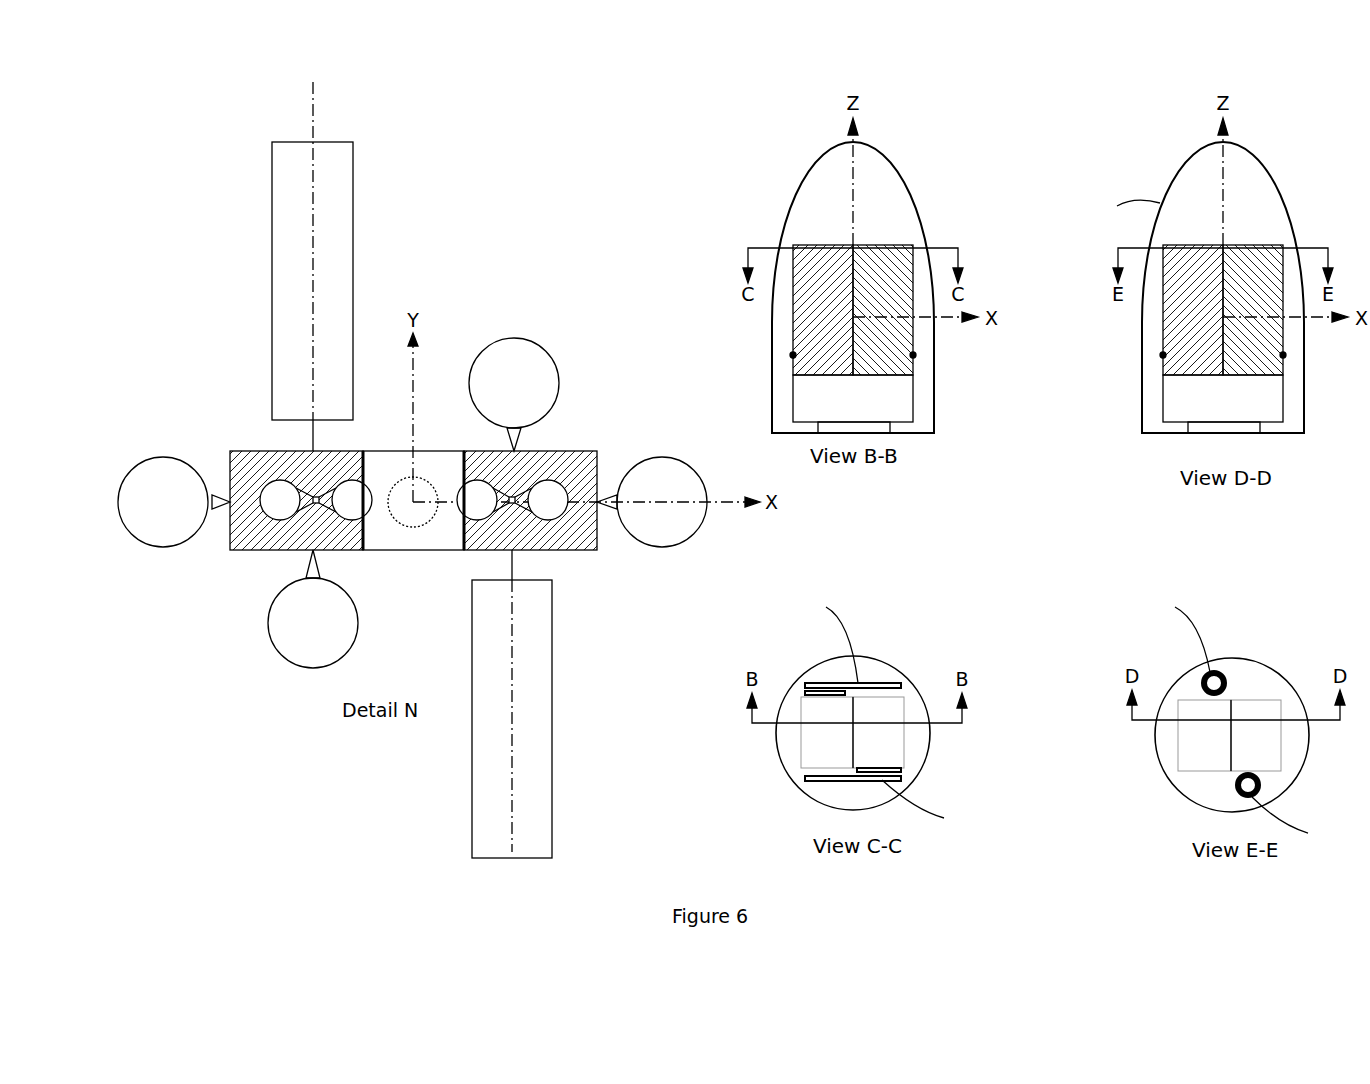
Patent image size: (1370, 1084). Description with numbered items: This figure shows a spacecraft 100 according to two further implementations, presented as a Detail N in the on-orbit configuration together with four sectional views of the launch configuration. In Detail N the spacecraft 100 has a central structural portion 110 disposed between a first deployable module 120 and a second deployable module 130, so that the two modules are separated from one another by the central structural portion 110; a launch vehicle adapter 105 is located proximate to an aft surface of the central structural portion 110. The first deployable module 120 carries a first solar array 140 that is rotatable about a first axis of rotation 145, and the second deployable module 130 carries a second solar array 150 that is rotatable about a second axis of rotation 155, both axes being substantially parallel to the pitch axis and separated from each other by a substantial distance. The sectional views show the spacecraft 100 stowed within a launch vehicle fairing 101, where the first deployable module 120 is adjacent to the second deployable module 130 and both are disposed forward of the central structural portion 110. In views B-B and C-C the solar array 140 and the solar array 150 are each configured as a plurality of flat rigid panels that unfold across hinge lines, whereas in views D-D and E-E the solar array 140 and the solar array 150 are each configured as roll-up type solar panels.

The spacecraft 100 is at (203, 128).
The launch vehicle fairing 101 is at (790, 203).
The launch vehicle adapter 105 is at (405, 480).
The central structural portion 110 is at (388, 552).
The first deployable module 120 is at (268, 535).
The second deployable module 130 is at (553, 553).
The first solar array 140 is at (272, 296).
The first axis of rotation 145 is at (313, 105).
The second solar array 150 is at (552, 688).
The second axis of rotation 155 is at (512, 712).